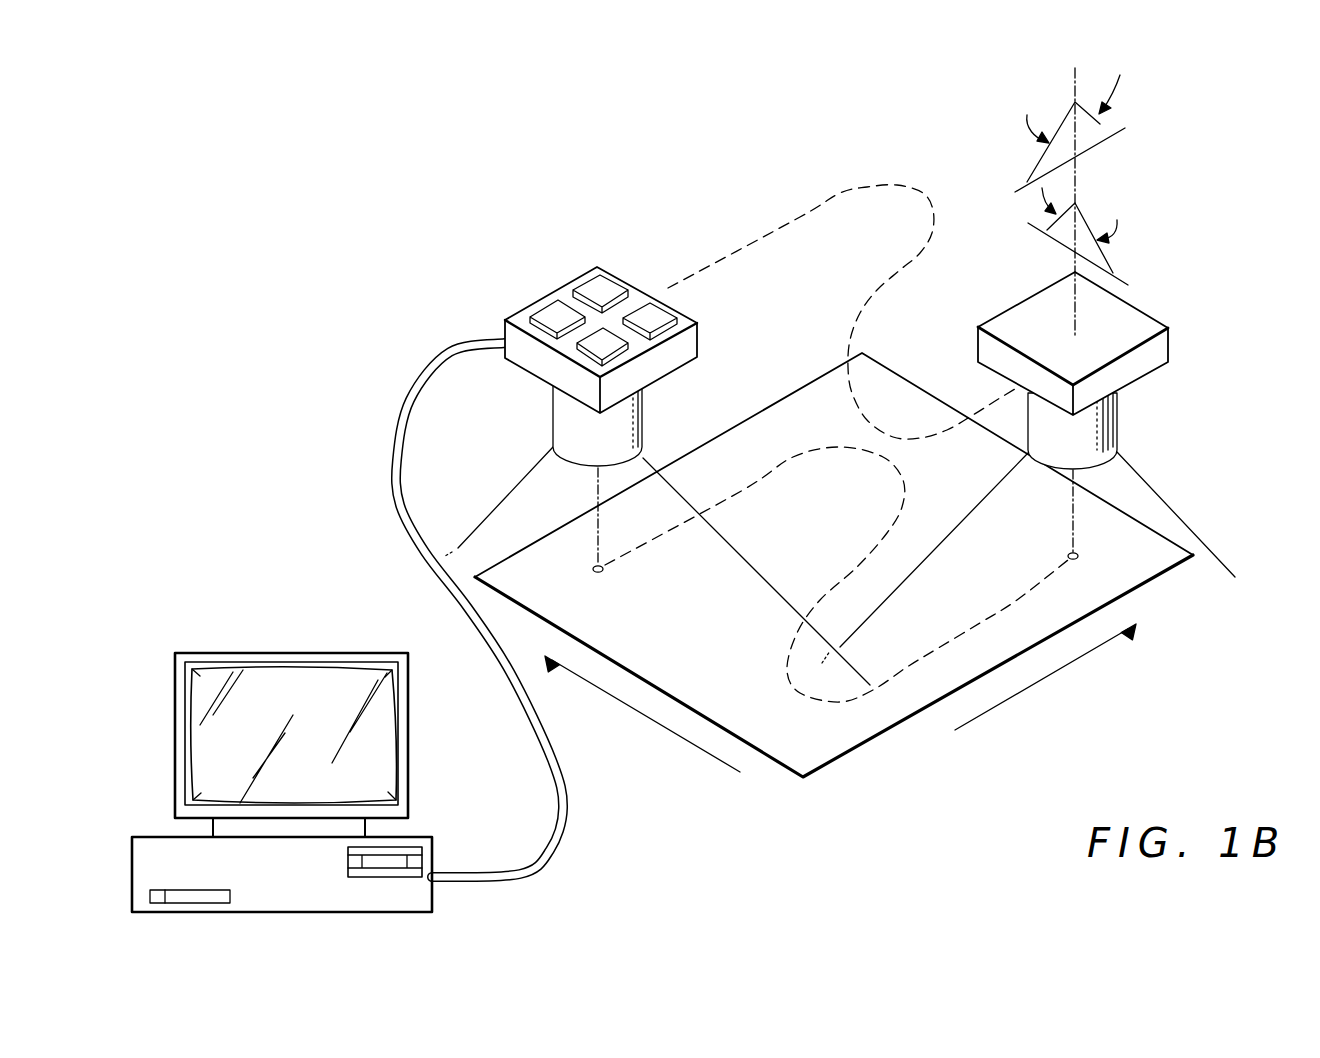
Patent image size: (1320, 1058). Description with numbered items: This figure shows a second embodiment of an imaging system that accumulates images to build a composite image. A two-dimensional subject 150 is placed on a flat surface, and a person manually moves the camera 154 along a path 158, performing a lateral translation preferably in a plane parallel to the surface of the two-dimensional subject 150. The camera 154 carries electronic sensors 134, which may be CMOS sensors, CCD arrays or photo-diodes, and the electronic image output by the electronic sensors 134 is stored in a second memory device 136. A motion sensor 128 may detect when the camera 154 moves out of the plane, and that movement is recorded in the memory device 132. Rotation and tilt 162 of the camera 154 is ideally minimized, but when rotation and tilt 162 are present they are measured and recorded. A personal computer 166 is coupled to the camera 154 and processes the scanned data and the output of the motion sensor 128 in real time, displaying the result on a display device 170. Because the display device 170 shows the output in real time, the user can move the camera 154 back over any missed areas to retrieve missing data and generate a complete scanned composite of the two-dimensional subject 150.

The motion sensor 128 is at (647, 307).
The memory device 132 is at (590, 288).
The electronic sensors 134 is at (608, 335).
The second memory device 136 is at (550, 318).
The two-dimensional subject 150 is at (826, 766).
The camera 154 is at (547, 547).
The path 158 is at (893, 184).
The rotation and tilt 162 is at (1092, 155).
The personal computer 166 is at (423, 860).
The display device 170 is at (257, 670).